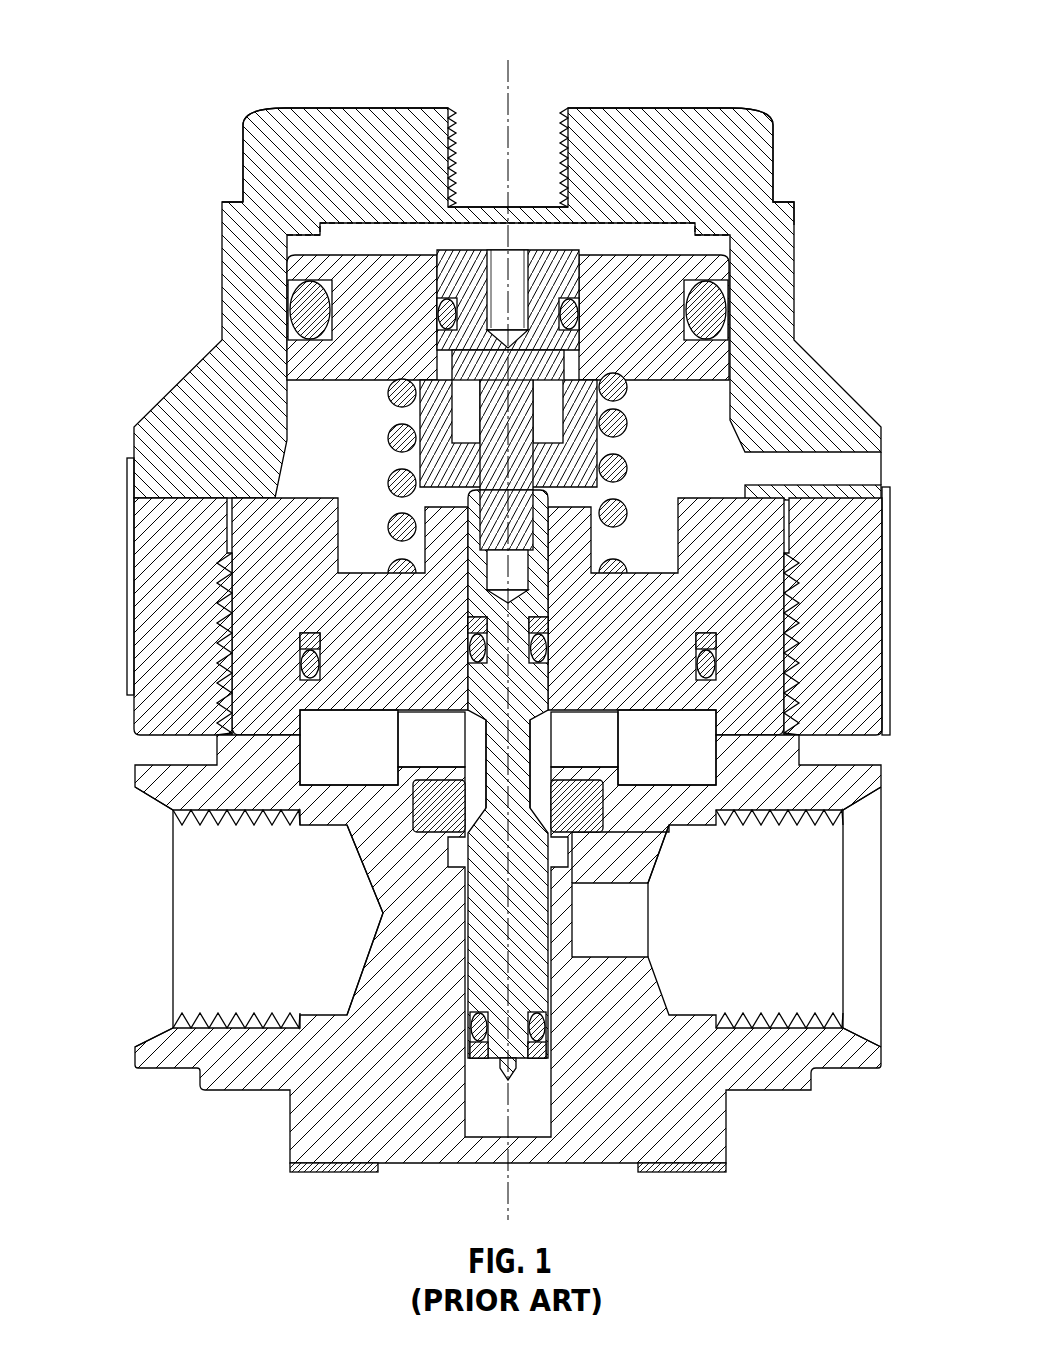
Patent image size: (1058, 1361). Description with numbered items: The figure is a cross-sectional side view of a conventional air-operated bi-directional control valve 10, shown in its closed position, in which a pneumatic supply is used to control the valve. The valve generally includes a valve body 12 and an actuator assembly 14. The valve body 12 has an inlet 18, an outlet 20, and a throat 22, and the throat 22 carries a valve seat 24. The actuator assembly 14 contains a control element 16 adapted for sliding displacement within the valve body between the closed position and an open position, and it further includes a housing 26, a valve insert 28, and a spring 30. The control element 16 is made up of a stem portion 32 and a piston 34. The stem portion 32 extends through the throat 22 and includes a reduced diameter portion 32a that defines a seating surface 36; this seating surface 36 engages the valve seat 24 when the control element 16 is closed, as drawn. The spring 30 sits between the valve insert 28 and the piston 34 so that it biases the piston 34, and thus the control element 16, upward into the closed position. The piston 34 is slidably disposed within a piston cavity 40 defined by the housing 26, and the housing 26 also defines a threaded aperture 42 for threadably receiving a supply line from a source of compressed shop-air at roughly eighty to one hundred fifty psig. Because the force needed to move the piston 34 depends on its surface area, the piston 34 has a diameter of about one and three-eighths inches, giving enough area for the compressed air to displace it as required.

The bi-directional control valve 10 is at (183, 42).
The valve body 12 is at (857, 1073).
The actuator assembly 14 is at (836, 382).
The control element 16 is at (492, 686).
The inlet 18 is at (858, 1003).
The outlet 20 is at (150, 1002).
The throat 22 is at (457, 887).
The valve seat 24 is at (527, 683).
The housing 26 is at (777, 297).
The valve insert 28 is at (758, 525).
The spring 30 is at (400, 438).
The stem portion 32 is at (580, 807).
The reduced diameter portion 32a is at (493, 753).
The piston 34 is at (343, 267).
The seating surface 36 is at (433, 807).
The piston cavity 40 is at (667, 237).
The threaded aperture 42 is at (561, 143).